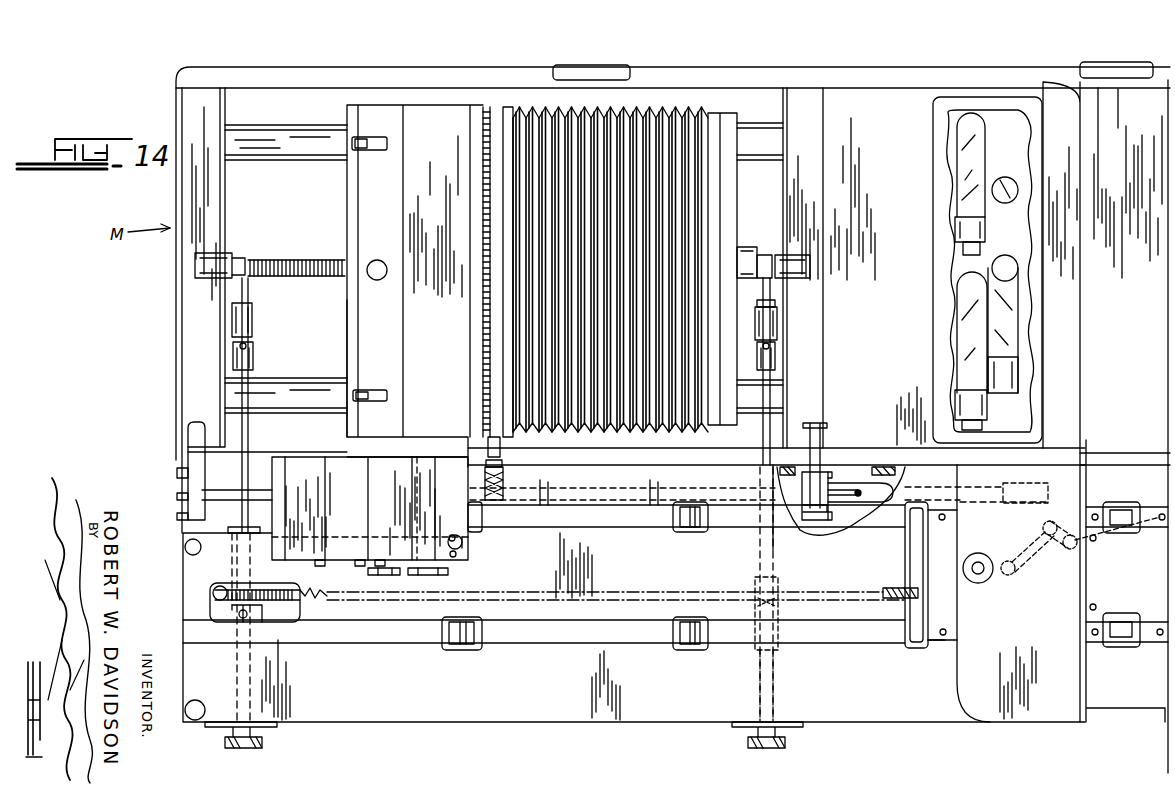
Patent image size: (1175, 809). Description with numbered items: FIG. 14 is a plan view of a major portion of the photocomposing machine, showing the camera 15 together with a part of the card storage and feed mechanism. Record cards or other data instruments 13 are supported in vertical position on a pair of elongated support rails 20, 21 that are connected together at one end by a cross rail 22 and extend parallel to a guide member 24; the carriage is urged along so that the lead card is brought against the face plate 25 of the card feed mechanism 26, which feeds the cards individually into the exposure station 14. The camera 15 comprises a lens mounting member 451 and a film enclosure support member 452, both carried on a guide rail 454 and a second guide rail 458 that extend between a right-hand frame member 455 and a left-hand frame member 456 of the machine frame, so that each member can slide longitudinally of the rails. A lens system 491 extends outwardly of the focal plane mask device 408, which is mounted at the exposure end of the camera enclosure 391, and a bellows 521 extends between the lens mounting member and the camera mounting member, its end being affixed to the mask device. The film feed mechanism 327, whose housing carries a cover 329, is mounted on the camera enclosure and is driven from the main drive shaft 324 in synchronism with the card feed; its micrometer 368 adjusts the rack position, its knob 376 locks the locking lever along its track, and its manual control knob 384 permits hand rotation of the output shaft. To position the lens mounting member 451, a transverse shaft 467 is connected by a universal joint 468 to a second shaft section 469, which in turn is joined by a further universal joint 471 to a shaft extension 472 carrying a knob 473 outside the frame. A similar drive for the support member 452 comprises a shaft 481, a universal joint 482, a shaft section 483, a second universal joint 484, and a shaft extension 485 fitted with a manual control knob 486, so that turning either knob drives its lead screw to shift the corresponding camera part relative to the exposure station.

The data instruments 13 is at (1150, 632).
The exposure station 14 is at (1130, 98).
The camera 15 is at (605, 240).
The support rail 20 is at (949, 522).
The support rail 21 is at (952, 642).
The cross rail 22 is at (917, 560).
The guide member 24 is at (1097, 455).
The face plate 25 is at (1088, 597).
The card feed mechanism 26 is at (1005, 705).
The main drive shaft 324 is at (608, 490).
The film feed mechanism 327 is at (383, 486).
The cover 329 is at (277, 557).
The micrometer 368 is at (465, 546).
The knob 376 is at (383, 576).
The manual control knob 384 is at (441, 576).
The camera enclosure 391 is at (403, 105).
The focal plane mask device 408 is at (470, 105).
The lens mounting member 451 is at (725, 113).
The film enclosure support member 452 is at (347, 330).
The guide rail 454 is at (770, 400).
The frame member 455 is at (812, 360).
The frame member 456 is at (193, 352).
The second guide rail 458 is at (283, 152).
The transverse shaft 467 is at (775, 304).
The universal joint 468 is at (777, 347).
The second shaft section 469 is at (760, 432).
The universal joint 471 is at (780, 604).
The shaft extension 472 is at (770, 690).
The knob 473 is at (788, 746).
The shaft 481 is at (252, 302).
The universal joint 482 is at (254, 324).
The shaft section 483 is at (246, 447).
The second universal joint 484 is at (233, 636).
The shaft extension 485 is at (255, 729).
The manual control knob 486 is at (232, 748).
The lens system 491 is at (795, 253).
The bellows 521 is at (668, 113).